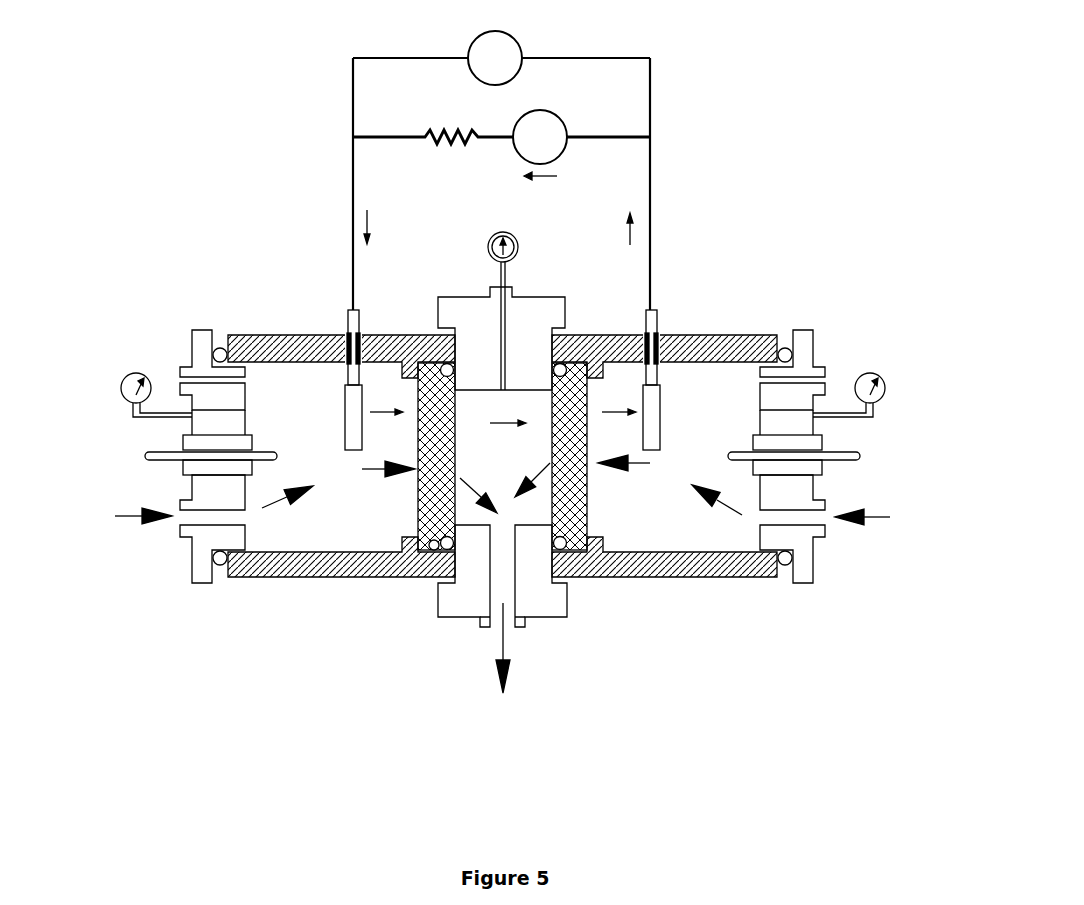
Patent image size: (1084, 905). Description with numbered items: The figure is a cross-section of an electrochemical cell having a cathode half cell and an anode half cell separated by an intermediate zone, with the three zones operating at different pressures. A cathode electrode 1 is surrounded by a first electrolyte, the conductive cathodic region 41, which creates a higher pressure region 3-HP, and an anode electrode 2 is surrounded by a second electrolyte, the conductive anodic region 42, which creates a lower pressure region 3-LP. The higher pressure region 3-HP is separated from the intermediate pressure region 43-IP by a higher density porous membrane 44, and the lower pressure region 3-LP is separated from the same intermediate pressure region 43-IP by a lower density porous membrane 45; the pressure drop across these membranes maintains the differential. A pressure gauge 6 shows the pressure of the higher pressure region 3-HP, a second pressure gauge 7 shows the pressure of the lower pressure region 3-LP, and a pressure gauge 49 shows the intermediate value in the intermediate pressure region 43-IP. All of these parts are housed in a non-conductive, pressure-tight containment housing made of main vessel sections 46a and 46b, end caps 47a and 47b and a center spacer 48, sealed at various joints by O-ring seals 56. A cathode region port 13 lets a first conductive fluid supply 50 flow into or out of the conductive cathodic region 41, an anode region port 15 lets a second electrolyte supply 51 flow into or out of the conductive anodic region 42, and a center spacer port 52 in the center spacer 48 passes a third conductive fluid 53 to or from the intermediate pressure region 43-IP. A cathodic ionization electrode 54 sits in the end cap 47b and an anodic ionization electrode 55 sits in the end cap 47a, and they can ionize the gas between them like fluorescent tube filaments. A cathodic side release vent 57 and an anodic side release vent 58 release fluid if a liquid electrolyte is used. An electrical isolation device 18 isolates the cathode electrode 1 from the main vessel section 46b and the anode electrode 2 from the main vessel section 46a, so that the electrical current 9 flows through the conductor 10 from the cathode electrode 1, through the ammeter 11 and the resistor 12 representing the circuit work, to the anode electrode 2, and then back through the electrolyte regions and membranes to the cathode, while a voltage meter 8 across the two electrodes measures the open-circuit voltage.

The cathode electrode 1 is at (662, 412).
The anode electrode 2 is at (347, 403).
The lower pressure region 3-LP is at (305, 532).
The higher pressure region 3-HP is at (710, 538).
The pressure gauge 6 is at (873, 372).
The second pressure gauge 7 is at (123, 377).
The voltage meter 8 is at (523, 45).
The electrical current flow 9 is at (550, 192).
The conductor 10 is at (352, 205).
The ammeter 11 is at (568, 128).
The resistor 12 is at (428, 127).
The cathode region port 13 is at (828, 537).
The anode region port 15 is at (175, 538).
The electrical isolation device 18 is at (347, 335).
The conductive cathodic region 41 is at (665, 517).
The conductive anodic region 42 is at (373, 515).
The intermediate pressure region 43-IP is at (523, 457).
The higher density porous membrane 44 is at (577, 560).
The lower density porous membrane 45 is at (427, 553).
The main vessel section 46a is at (248, 335).
The main vessel section 46b is at (735, 335).
The end cap 47a is at (190, 428).
The end cap 47b is at (813, 427).
The center spacer 48 is at (440, 306).
The pressure gauge 49 is at (490, 240).
The first conductive fluid supply 50 is at (873, 522).
The second electrolyte supply 51 is at (135, 520).
The center spacer port 52 is at (480, 633).
The third conductive fluid 53 is at (497, 688).
The cathodic ionization electrode 54 is at (862, 457).
The anodic ionization electrode 55 is at (143, 467).
The O-ring seals 56 is at (214, 566).
The cathodic side release vent 57 is at (830, 362).
The anodic side release vent 58 is at (175, 362).